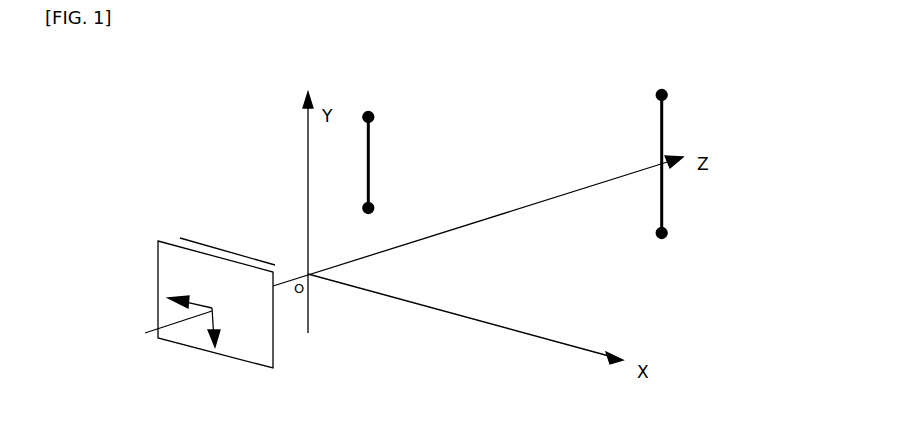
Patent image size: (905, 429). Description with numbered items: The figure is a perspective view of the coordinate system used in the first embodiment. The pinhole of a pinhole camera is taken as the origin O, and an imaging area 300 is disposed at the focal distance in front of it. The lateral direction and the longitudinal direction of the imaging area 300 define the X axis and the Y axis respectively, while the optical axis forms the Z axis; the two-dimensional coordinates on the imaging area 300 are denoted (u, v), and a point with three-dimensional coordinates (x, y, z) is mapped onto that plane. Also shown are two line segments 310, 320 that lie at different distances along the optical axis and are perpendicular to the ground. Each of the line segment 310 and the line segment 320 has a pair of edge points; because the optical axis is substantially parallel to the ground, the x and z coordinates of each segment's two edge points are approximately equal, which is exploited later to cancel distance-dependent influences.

The imaging area 300 is at (171, 232).
The line segment 310 is at (370, 178).
The line segment 320 is at (663, 202).